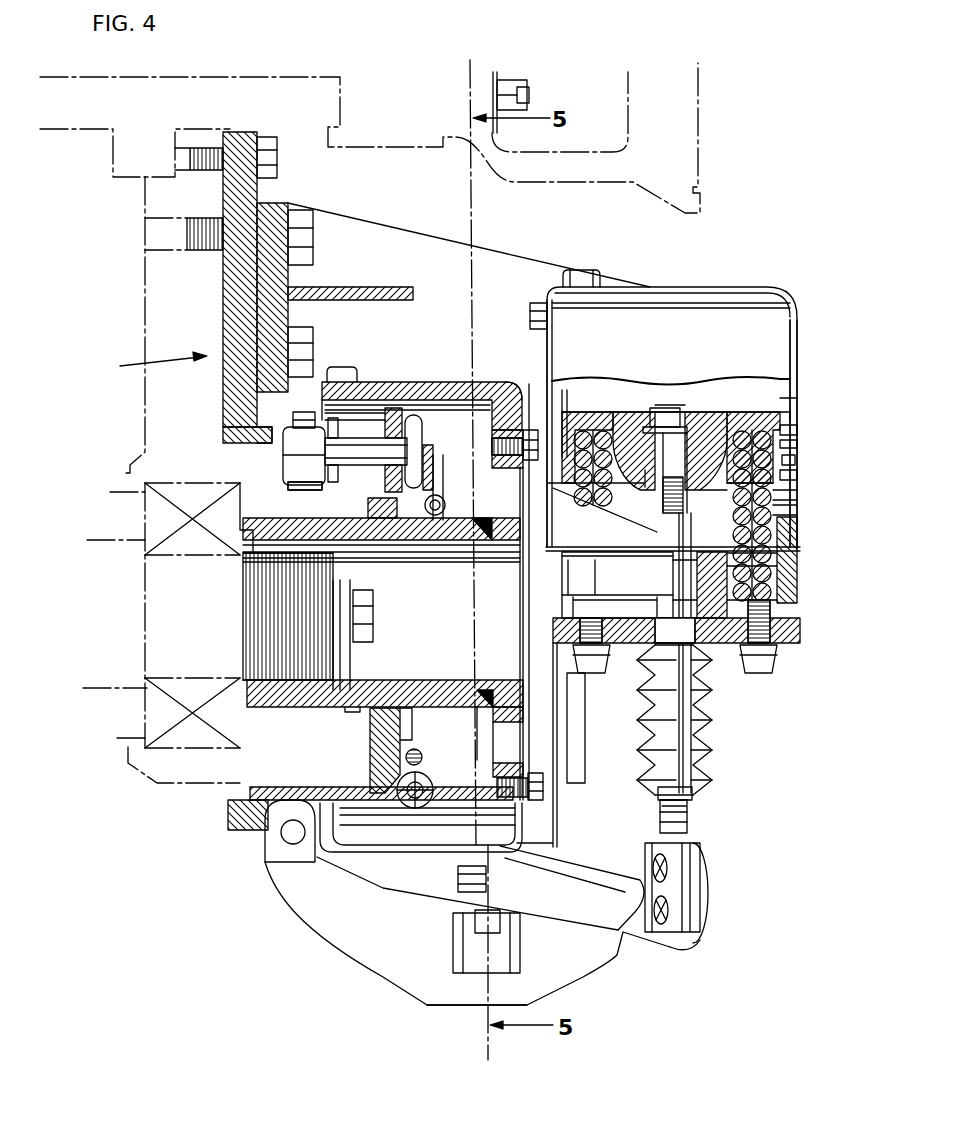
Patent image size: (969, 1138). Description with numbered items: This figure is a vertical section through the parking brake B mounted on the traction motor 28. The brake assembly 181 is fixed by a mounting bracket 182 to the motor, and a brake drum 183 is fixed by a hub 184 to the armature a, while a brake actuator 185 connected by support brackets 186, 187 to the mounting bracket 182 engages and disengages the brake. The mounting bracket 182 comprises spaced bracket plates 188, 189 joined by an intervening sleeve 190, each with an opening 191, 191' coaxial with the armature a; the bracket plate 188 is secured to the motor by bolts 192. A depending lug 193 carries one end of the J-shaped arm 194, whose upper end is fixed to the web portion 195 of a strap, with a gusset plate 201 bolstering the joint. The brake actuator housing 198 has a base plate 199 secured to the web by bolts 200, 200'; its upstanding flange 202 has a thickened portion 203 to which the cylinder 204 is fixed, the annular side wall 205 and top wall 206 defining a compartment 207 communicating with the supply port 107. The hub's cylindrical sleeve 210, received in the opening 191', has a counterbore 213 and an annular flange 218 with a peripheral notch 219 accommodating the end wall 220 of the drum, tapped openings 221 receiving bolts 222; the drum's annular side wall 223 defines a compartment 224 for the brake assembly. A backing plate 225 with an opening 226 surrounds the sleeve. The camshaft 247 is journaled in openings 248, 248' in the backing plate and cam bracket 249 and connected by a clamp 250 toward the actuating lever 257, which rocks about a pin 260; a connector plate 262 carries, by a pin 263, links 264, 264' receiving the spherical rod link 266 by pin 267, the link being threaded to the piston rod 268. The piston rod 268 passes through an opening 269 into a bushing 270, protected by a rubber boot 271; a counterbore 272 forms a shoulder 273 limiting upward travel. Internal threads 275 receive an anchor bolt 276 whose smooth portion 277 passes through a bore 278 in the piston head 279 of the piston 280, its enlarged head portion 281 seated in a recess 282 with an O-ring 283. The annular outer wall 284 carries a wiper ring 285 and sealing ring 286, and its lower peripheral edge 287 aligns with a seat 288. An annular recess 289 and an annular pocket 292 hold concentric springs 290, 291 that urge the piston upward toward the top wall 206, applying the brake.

The traction motor 28 is at (152, 272).
The supply port 107 is at (585, 270).
The brake assembly 181 is at (423, 410).
The mounting bracket 182 is at (144, 365).
The brake drum 183 is at (377, 374).
The hub 184 is at (436, 676).
The brake actuator 185 is at (811, 380).
The support bracket 186 is at (425, 1005).
The support bracket 187 is at (490, 248).
The bracket plate 188 is at (223, 288).
The bracket plate 189 is at (370, 752).
The sleeve 190 is at (250, 436).
The opening 191 is at (218, 517).
The opening 191' is at (330, 722).
The bolts 192 is at (277, 158).
The depending lug 193 is at (272, 852).
The J-shaped arm 194 is at (340, 922).
The web portion 195 is at (553, 645).
The brake actuator housing 198 is at (683, 346).
The base plate 199 is at (726, 648).
The bolt 200 is at (597, 663).
The bolt 200' is at (769, 654).
The gusset plate 201 is at (585, 745).
The upstanding flange 202 is at (775, 581).
The thickened portion 203 is at (797, 533).
The cylinder 204 is at (797, 416).
The annular side wall 205 is at (797, 478).
The top wall 206 is at (720, 288).
The compartment 207 is at (797, 398).
The cylindrical sleeve 210 is at (452, 545).
The counterbore 213 is at (378, 700).
The annular flange 218 is at (510, 545).
The peripheral notch 219 is at (510, 470).
The end wall 220 is at (528, 400).
The tapped openings 221 is at (515, 808).
The bolts 222 is at (543, 797).
The annular side wall 223 is at (502, 384).
The compartment 224 is at (330, 413).
The backing plate 225 is at (421, 750).
The opening 226 is at (415, 718).
The camshaft 247 is at (380, 464).
The opening 248 is at (398, 417).
The opening 248' is at (340, 408).
The cam bracket 249 is at (310, 485).
The clamp 250 is at (290, 486).
The actuating lever 257 is at (430, 875).
The pin 260 is at (488, 880).
The connector plate 262 is at (620, 940).
The pin 263 is at (672, 947).
The link 264 is at (701, 887).
The link 264' is at (719, 893).
The spherical rod link 266 is at (688, 827).
The pin 267 is at (653, 868).
The piston rod 268 is at (712, 732).
The opening 269 is at (634, 645).
The bushing 270 is at (695, 566).
The rubber boot 271 is at (698, 792).
The counterbore 272 is at (690, 604).
The shoulder 273 is at (640, 572).
The internal threads 275 is at (648, 518).
The anchor bolt 276 is at (707, 390).
The smooth portion 277 is at (690, 442).
The bore 278 is at (625, 420).
The piston head 279 is at (630, 410).
The piston 280 is at (568, 388).
The enlarged head portion 281 is at (667, 405).
The recess 282 is at (656, 412).
The O-ring 283 is at (722, 440).
The annular outer wall 284 is at (797, 431).
The wiper ring 285 is at (795, 464).
The sealing ring 286 is at (797, 447).
The lower peripheral edge 287 is at (797, 499).
The seat 288 is at (797, 515).
The annular recess 289 is at (730, 430).
The spring 290 is at (777, 553).
The spring 291 is at (777, 566).
The annular pocket 292 is at (777, 600).
The armature a is at (243, 595).
The parking brake B is at (662, 244).